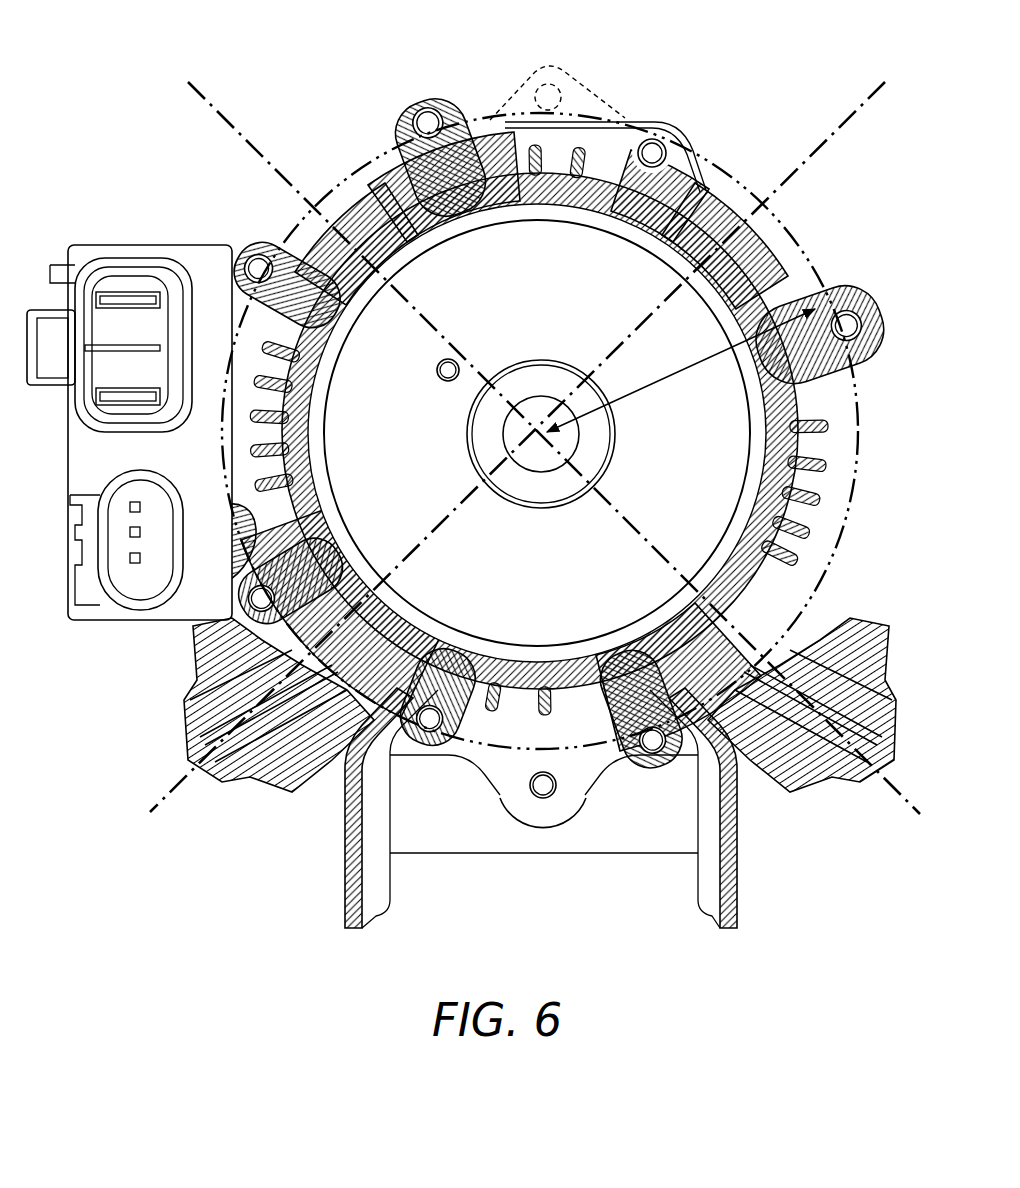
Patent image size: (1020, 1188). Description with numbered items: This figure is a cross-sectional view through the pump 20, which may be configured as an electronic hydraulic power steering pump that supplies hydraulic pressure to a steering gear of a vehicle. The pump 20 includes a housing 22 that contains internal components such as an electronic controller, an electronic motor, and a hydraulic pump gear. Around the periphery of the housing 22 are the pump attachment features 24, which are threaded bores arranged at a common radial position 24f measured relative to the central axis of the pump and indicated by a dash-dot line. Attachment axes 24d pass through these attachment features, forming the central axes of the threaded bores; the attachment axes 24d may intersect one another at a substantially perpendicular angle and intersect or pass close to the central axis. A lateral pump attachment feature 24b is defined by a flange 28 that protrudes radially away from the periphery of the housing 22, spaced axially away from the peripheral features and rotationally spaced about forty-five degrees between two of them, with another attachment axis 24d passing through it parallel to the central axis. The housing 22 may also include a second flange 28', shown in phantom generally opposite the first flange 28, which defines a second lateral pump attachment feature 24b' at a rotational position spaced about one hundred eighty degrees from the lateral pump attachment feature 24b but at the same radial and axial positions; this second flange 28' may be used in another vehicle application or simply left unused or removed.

The pump 20 is at (284, 104).
The housing 22 is at (826, 387).
The pump attachment features 24 is at (540, 773).
The lateral pump attachment feature 24b is at (534, 841).
The second lateral pump attachment feature 24b' is at (523, 71).
The attachment axes 24d is at (830, 142).
The common radial position 24f is at (657, 380).
The flange 28 is at (565, 839).
The second flange 28' is at (591, 85).